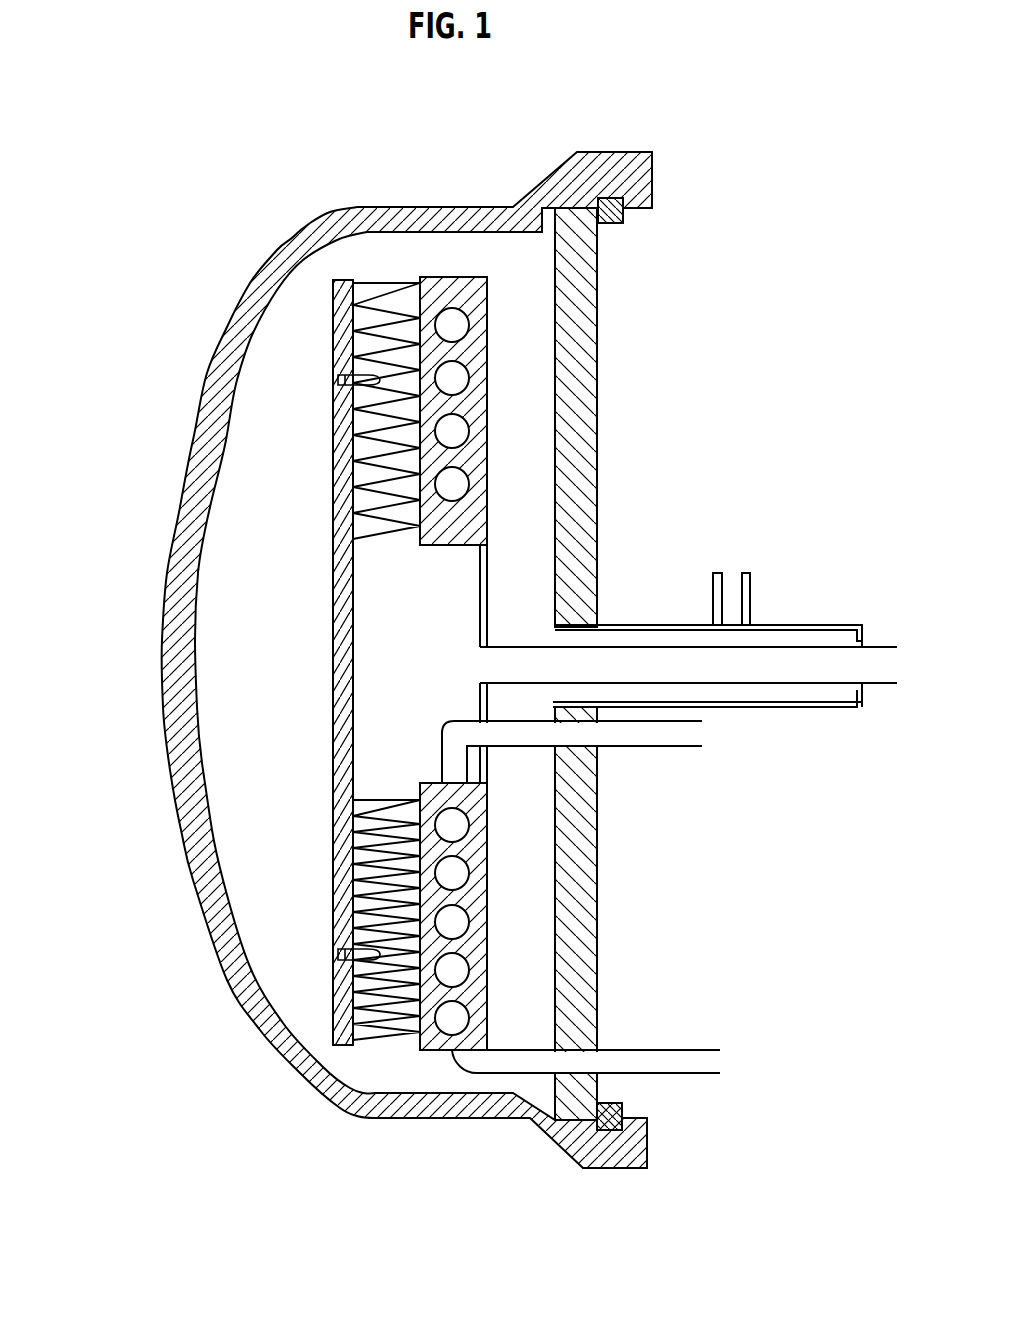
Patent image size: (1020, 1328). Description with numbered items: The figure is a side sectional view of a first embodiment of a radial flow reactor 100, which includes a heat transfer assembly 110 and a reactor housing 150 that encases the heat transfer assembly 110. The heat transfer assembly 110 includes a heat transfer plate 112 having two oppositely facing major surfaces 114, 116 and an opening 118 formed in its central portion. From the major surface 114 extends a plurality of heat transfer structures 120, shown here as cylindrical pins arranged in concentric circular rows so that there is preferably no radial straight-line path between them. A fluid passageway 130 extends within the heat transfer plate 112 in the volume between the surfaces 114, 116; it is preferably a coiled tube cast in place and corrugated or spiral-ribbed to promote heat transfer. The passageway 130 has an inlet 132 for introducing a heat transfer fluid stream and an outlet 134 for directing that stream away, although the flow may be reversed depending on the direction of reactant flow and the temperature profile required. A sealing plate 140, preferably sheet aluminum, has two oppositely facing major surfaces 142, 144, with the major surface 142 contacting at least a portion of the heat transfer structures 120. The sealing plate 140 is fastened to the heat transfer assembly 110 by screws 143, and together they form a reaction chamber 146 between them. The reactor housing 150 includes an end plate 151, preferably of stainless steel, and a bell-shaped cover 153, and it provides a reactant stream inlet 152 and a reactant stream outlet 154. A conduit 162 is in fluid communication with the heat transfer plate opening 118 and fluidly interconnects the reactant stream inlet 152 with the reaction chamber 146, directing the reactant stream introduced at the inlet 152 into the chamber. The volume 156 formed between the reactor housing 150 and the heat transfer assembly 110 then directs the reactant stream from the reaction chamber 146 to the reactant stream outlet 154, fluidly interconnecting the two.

The radial flow reactor 100 is at (209, 163).
The heat transfer assembly 110 is at (560, 324).
The heat transfer plate 112 is at (470, 408).
The major surface 114 is at (357, 408).
The major surface 116 is at (490, 373).
The opening 118 is at (453, 663).
The heat transfer structures 120 is at (360, 521).
The fluid passageway 130 is at (455, 487).
The inlet 132 is at (687, 732).
The outlet 134 is at (708, 1058).
The sealing plate 140 is at (343, 575).
The major surface 142 is at (353, 597).
The screws 143 is at (337, 378).
The major surface 144 is at (333, 630).
The reaction chamber 146 is at (373, 772).
The reactor housing 150 is at (498, 1131).
The end plate 151 is at (583, 302).
The reactant stream inlet 152 is at (873, 667).
The bell-shaped cover 153 is at (203, 878).
The reactant stream outlet 154 is at (728, 628).
The volume 156 is at (478, 255).
The conduit 162 is at (785, 670).